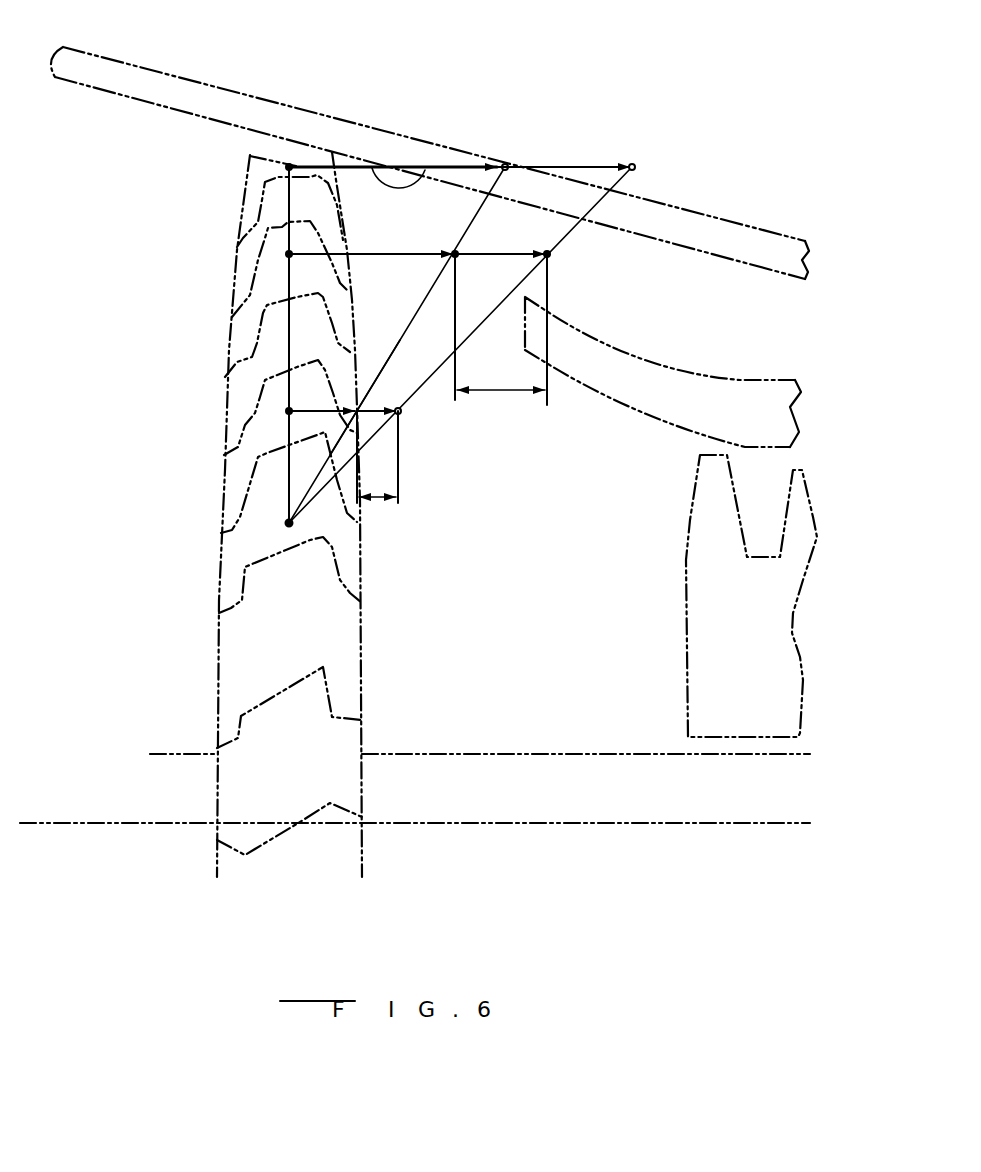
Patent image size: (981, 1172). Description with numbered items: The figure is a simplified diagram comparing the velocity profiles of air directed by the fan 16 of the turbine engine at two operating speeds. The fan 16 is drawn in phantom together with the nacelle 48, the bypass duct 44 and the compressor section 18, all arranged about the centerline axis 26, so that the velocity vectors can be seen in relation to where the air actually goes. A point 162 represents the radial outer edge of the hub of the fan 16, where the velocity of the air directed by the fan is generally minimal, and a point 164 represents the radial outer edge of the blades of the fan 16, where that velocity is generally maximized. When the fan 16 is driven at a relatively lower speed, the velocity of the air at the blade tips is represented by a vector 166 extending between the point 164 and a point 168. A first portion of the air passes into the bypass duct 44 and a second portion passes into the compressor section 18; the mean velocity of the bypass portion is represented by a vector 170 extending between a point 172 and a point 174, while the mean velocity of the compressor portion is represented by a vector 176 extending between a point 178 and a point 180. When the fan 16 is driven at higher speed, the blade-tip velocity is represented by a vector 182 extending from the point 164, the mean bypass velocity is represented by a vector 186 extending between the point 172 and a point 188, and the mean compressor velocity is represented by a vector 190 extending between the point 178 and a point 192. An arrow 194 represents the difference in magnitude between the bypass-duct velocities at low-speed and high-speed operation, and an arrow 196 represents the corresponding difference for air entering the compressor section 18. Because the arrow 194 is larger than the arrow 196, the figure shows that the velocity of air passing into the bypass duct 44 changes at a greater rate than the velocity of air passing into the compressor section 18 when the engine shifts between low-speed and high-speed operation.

The second fan 16 is at (224, 638).
The compressor section 18 is at (742, 748).
The centerline axis 26 is at (162, 823).
The bypass duct 44 is at (712, 333).
The nacelle 48 is at (713, 223).
The point 162 is at (292, 524).
The point 164 is at (289, 167).
The vector 166 is at (426, 170).
The point 168 is at (500, 165).
The vector 170 is at (368, 252).
The point 172 is at (289, 254).
The point 174 is at (633, 165).
The vector 176 is at (318, 378).
The point 178 is at (289, 411).
The point 180 is at (357, 412).
The vector 182 is at (570, 163).
The vector 186 is at (492, 253).
The point 188 is at (550, 258).
The vector 190 is at (383, 409).
The point 192 is at (402, 413).
The arrow 194 is at (498, 392).
The arrow 196 is at (378, 500).